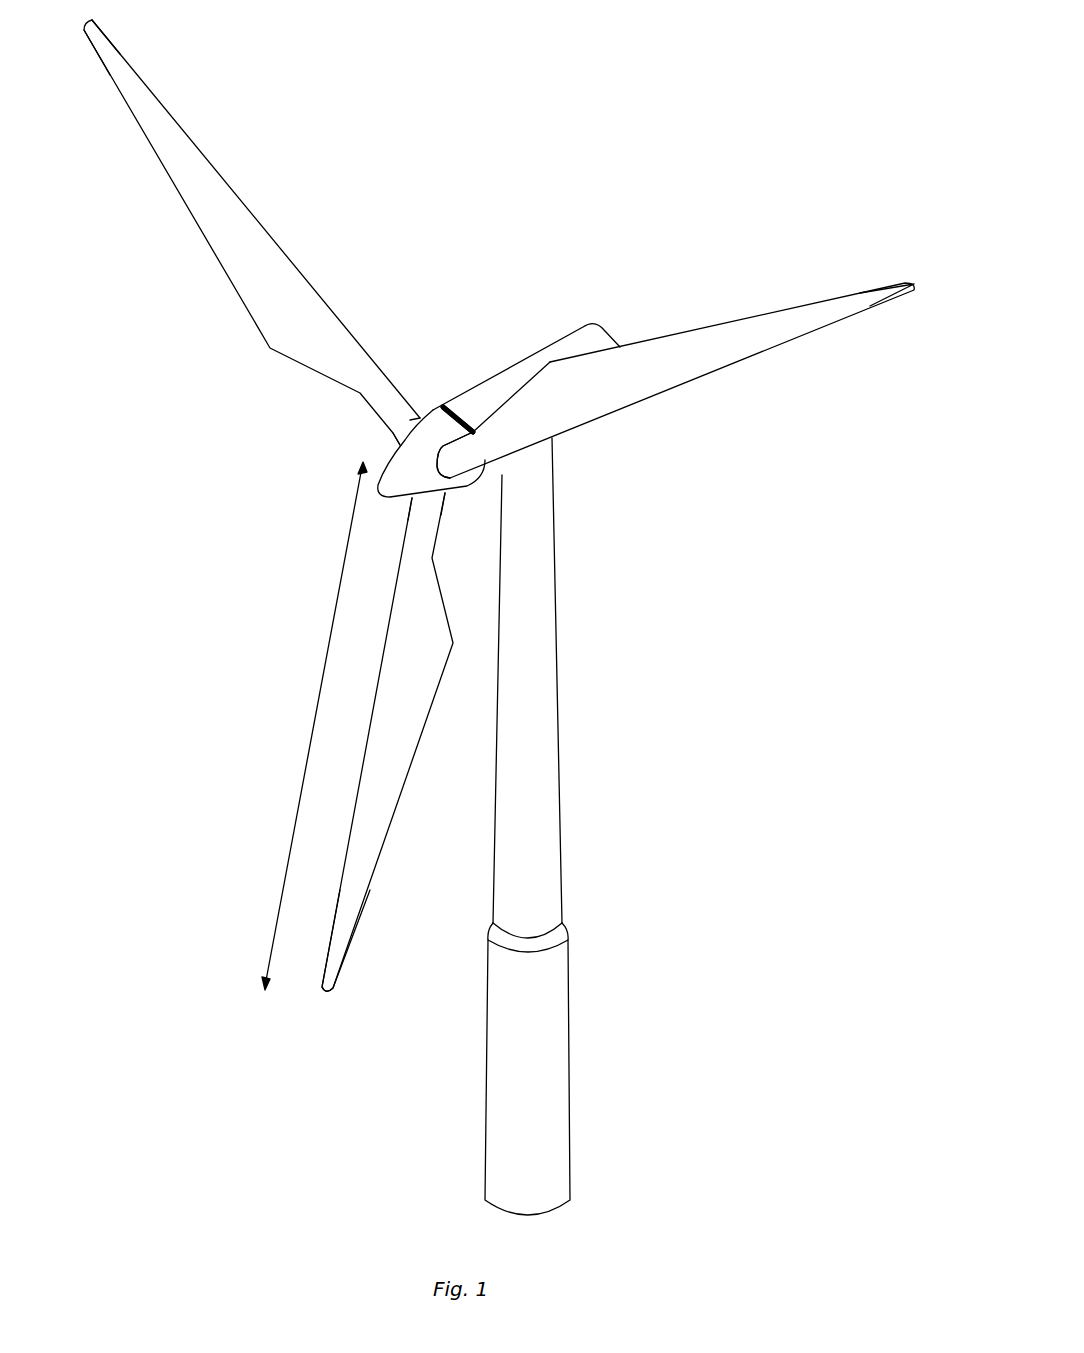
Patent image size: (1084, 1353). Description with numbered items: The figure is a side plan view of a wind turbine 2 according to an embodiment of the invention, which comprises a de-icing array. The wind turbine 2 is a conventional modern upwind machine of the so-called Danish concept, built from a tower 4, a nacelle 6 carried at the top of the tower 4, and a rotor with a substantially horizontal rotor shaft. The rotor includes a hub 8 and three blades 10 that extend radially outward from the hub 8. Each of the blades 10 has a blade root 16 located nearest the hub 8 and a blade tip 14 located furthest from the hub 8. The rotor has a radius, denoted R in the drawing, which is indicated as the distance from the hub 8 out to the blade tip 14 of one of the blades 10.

The wind turbine 2 is at (656, 767).
The tower 4 is at (548, 690).
The nacelle 6 is at (489, 389).
The hub 8 is at (390, 463).
The blades 10 is at (288, 322).
The blade tip 14 is at (131, 81).
The blade root 16 is at (411, 429).